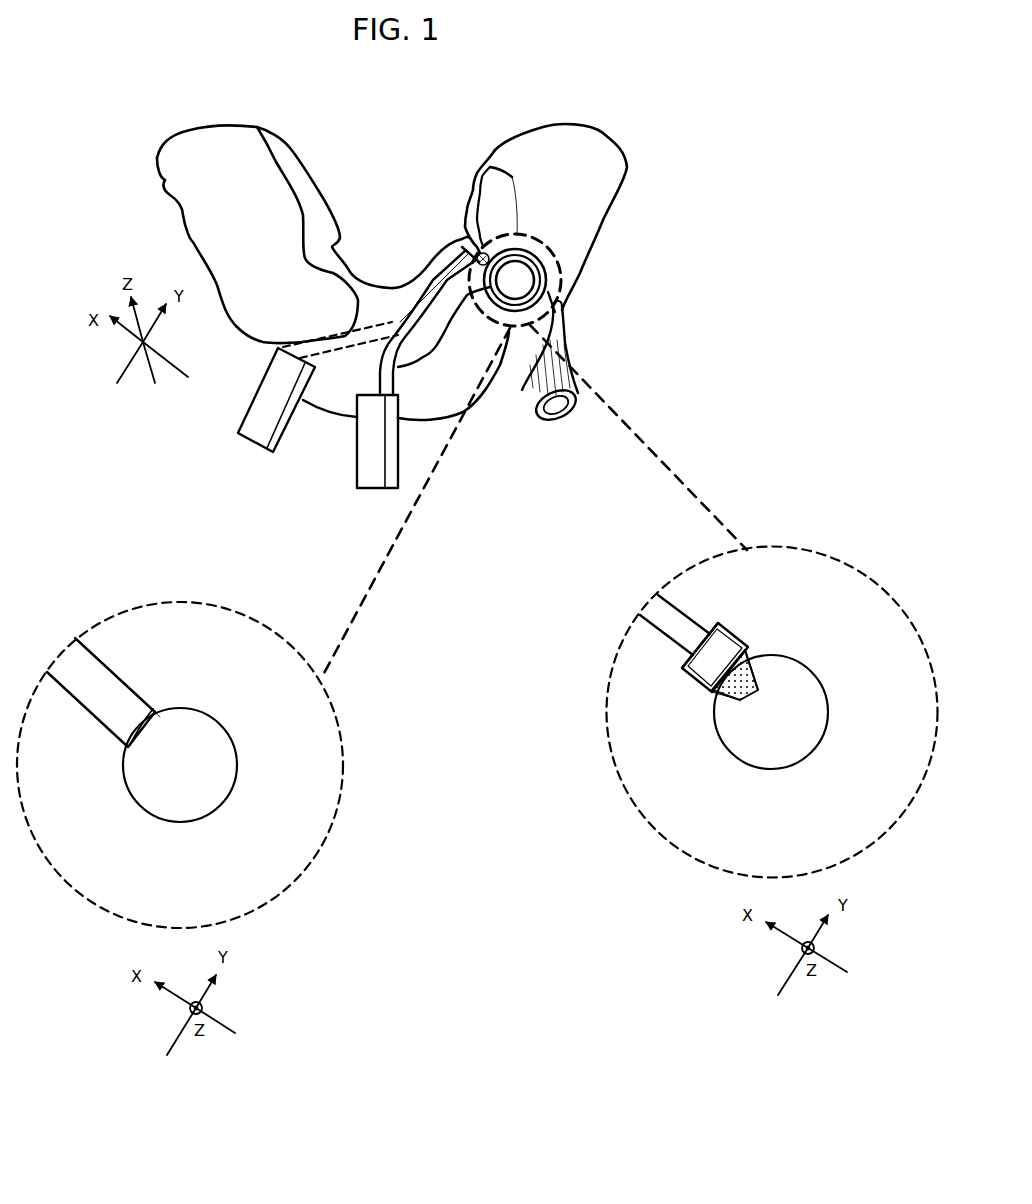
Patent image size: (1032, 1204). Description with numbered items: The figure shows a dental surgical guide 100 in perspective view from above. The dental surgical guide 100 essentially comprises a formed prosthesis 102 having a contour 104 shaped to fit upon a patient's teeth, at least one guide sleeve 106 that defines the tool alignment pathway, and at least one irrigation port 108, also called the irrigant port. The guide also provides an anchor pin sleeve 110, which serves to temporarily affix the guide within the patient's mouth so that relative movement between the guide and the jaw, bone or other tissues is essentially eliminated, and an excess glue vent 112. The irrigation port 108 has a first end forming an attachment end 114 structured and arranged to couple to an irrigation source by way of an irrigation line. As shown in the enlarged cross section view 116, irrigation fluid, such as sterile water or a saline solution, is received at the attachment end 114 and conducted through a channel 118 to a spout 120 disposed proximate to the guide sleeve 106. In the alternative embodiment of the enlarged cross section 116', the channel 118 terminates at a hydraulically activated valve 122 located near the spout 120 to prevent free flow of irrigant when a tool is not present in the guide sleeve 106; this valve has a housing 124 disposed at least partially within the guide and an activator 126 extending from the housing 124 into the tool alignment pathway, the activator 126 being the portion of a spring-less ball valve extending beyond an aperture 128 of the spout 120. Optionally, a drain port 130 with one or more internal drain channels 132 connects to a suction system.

The dental surgical guide 100 is at (648, 125).
The formed prosthesis 102 is at (587, 220).
The contour 104 is at (490, 167).
The guide sleeve 106 is at (549, 290).
The irrigation port 108 is at (378, 487).
The anchor pin sleeve 110 is at (580, 352).
The excess glue vent 112 is at (478, 256).
The attachment end 114 is at (362, 471).
The enlarged cross section view 116 is at (180, 753).
The enlarged cross section 116' is at (772, 679).
The channel 118 is at (411, 289).
The spout 120 is at (153, 708).
The hydraulically activated valve 122 is at (728, 628).
The housing 124 is at (681, 673).
The activator 126 is at (758, 682).
The aperture 128 is at (132, 748).
The drain port 130 is at (243, 423).
The internal drain channel 132 is at (268, 344).